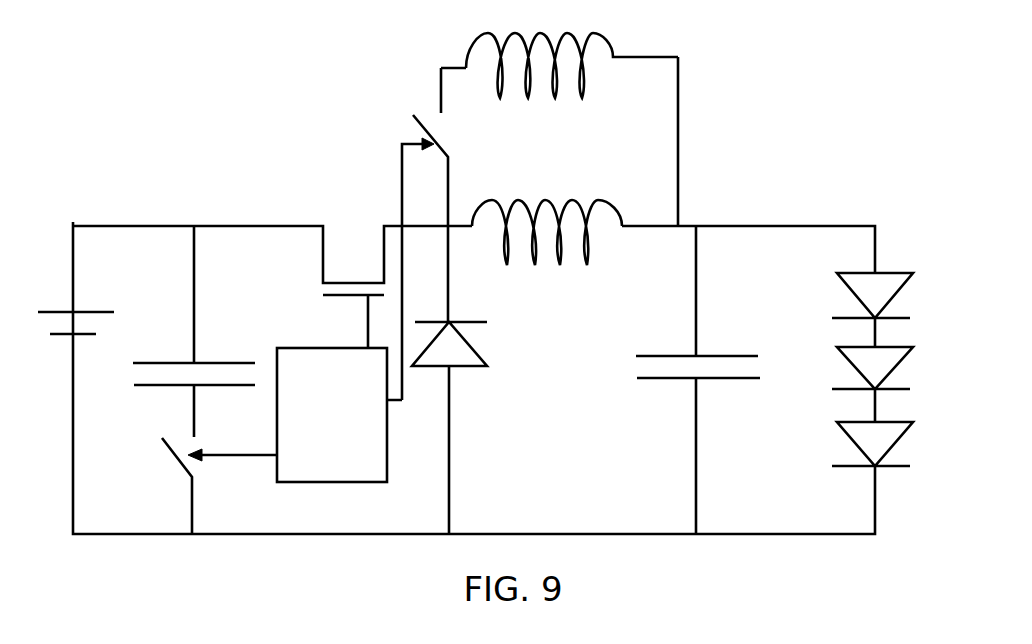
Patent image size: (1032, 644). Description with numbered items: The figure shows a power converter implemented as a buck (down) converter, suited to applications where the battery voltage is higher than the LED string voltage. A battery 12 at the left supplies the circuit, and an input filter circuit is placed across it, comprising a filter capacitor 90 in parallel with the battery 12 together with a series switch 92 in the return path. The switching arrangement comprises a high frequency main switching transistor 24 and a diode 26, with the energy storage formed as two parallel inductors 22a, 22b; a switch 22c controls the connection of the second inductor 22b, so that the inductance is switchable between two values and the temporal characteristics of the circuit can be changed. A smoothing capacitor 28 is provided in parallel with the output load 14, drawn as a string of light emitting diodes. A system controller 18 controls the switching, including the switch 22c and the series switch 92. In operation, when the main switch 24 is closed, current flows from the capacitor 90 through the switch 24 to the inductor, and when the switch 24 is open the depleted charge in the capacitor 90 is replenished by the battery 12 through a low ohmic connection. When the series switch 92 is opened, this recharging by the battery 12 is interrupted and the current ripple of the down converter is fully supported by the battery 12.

The battery 12 is at (60, 311).
The load 14 is at (921, 302).
The system controller 18 is at (317, 483).
The first inductor 22a is at (562, 202).
The second inductor 22b is at (497, 92).
The switch 22c is at (423, 111).
The main switching transistor 24 is at (323, 270).
The diode 26 is at (480, 357).
The smoothing capacitor 28 is at (712, 352).
The filter capacitor 90 is at (212, 362).
The series switch 92 is at (173, 458).